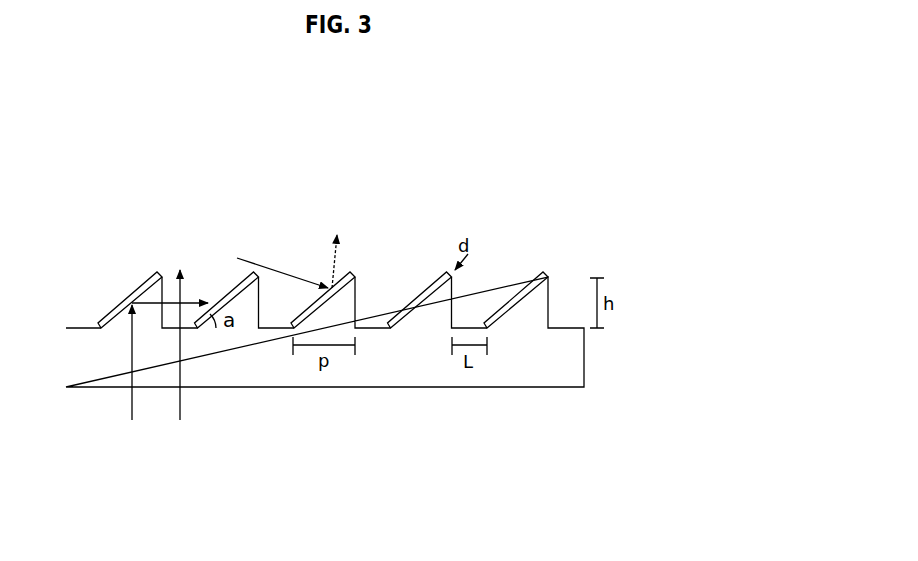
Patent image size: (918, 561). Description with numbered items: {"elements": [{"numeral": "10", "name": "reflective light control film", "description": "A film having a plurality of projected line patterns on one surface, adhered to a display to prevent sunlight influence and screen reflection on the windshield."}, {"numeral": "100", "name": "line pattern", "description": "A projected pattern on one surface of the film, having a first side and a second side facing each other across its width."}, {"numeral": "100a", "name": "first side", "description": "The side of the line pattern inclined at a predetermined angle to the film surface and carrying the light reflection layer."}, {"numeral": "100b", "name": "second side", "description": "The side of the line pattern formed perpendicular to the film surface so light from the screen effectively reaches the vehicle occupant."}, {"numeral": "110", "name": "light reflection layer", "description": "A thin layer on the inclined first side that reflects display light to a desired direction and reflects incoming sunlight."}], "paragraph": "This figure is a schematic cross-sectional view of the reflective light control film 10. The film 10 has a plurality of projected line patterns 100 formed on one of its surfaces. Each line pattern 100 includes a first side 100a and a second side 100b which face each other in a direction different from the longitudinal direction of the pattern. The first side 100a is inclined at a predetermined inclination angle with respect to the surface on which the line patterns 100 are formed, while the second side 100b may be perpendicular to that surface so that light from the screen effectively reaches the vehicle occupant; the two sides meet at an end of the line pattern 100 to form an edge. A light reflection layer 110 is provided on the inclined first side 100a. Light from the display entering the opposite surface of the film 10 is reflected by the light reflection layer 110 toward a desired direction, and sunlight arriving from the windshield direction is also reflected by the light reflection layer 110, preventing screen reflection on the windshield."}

The optical sheet 10 is at (334, 317).
The prism 100 is at (543, 261).
The inclined surface of prism 100a is at (422, 303).
The vertical surface of prism 100b is at (358, 298).
The top inclined surface of prism 110 is at (535, 279).